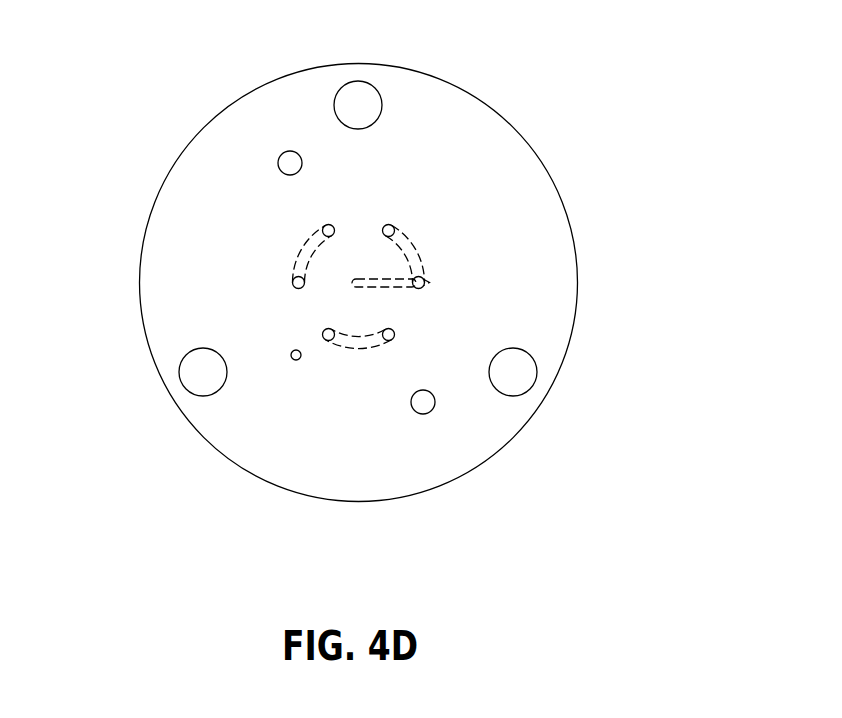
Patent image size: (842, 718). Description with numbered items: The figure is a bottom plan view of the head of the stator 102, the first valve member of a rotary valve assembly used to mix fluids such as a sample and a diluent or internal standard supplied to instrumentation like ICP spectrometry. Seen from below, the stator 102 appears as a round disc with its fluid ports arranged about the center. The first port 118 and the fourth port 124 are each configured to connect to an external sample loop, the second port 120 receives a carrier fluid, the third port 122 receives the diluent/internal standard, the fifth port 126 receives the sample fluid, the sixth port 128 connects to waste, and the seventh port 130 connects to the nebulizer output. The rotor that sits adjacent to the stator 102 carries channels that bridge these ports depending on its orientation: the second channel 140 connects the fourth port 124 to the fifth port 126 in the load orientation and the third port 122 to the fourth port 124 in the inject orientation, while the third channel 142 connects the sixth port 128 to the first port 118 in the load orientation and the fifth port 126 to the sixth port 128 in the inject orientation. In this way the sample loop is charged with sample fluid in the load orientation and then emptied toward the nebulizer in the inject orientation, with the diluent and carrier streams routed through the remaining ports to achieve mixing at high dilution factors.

The stator 102 is at (580, 282).
The first port 118 is at (327, 341).
The second port 120 is at (388, 341).
The third port 122 is at (420, 291).
The fourth port 124 is at (389, 225).
The fifth port 126 is at (327, 225).
The sixth port 128 is at (292, 280).
The seventh port 130 is at (352, 283).
The second channel 140 is at (417, 245).
The third channel 142 is at (302, 245).